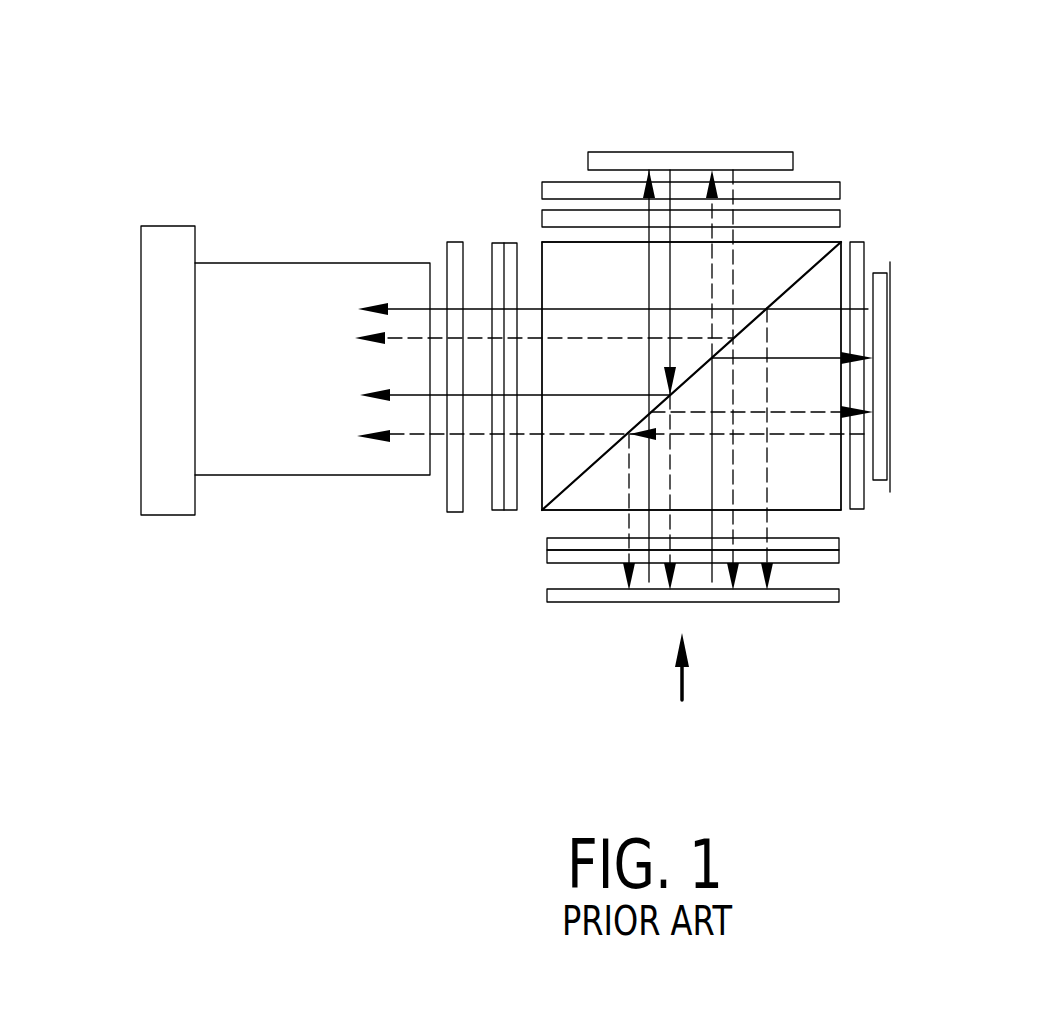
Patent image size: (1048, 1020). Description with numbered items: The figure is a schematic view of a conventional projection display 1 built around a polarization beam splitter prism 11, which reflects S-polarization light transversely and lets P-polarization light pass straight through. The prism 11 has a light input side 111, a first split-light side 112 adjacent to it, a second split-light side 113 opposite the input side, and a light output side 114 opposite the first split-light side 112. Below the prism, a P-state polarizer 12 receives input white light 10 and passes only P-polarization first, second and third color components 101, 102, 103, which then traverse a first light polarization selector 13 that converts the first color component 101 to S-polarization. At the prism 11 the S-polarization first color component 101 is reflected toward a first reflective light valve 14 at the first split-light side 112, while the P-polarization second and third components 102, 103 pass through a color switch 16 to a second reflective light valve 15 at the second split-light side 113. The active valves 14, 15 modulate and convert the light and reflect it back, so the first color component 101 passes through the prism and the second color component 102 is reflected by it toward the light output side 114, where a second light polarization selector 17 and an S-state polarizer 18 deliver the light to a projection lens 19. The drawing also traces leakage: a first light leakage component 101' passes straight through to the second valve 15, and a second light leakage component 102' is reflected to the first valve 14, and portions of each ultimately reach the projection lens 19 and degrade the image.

The conventional projection display 1 is at (897, 158).
The input white light 10 is at (687, 677).
The first color component 101 is at (581, 429).
The first light leakage component 101' is at (713, 201).
The second color component 102 is at (524, 444).
The second light leakage component 102' is at (829, 395).
The third color component 103 is at (642, 732).
The polarization beam splitter prism 11 is at (795, 470).
The light input side 111 is at (785, 498).
The first split-light side 112 is at (827, 290).
The second split-light side 113 is at (770, 263).
The light output side 114 is at (560, 270).
The P-state polarizer 12 is at (565, 597).
The first light polarization selector 13 is at (547, 562).
The first reflective light valve 14 is at (875, 335).
The second reflective light valve 15 is at (598, 160).
The color switch 16 is at (823, 220).
The second light polarization selector 17 is at (497, 503).
The S-state polarizer 18 is at (450, 503).
The projection lens 19 is at (252, 462).